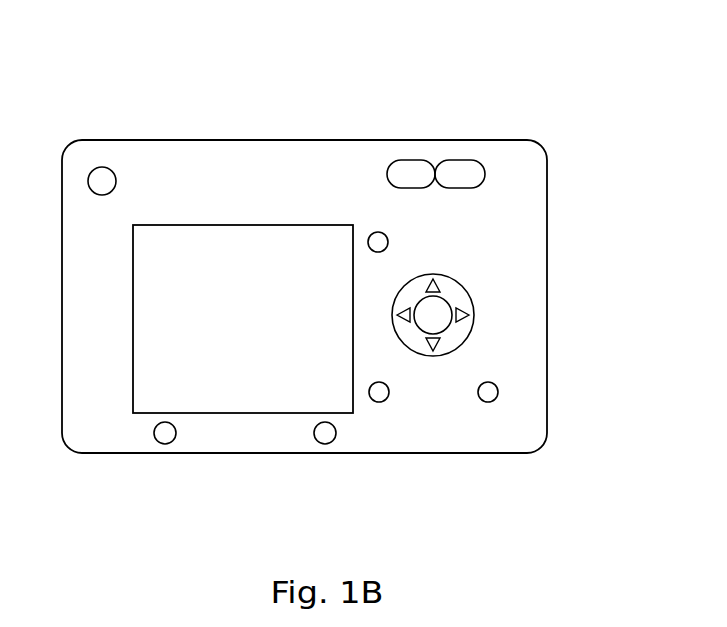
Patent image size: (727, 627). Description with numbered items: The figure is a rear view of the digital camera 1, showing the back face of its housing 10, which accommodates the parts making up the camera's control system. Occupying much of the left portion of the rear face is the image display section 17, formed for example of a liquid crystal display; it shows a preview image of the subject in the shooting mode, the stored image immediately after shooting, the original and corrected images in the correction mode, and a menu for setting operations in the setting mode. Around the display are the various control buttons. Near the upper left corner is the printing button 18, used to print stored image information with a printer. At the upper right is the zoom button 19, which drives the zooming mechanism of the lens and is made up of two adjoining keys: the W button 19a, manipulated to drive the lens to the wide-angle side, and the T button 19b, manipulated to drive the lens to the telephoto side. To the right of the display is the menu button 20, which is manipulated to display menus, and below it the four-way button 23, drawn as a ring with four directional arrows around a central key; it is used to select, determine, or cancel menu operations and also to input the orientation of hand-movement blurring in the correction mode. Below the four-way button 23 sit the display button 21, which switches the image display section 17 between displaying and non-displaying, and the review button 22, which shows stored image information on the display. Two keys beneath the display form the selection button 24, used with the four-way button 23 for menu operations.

The digital camera 1 is at (264, 110).
The housing 10 is at (512, 138).
The image display section 17 is at (163, 368).
The printing button 18 is at (103, 173).
The zoom button 19 is at (436, 100).
The W button 19a is at (405, 160).
The T button 19b is at (460, 125).
The menu button 20 is at (384, 239).
The display button 21 is at (377, 402).
The review button 22 is at (487, 402).
The four-way button 23 is at (433, 357).
The selection button 24 is at (165, 444).